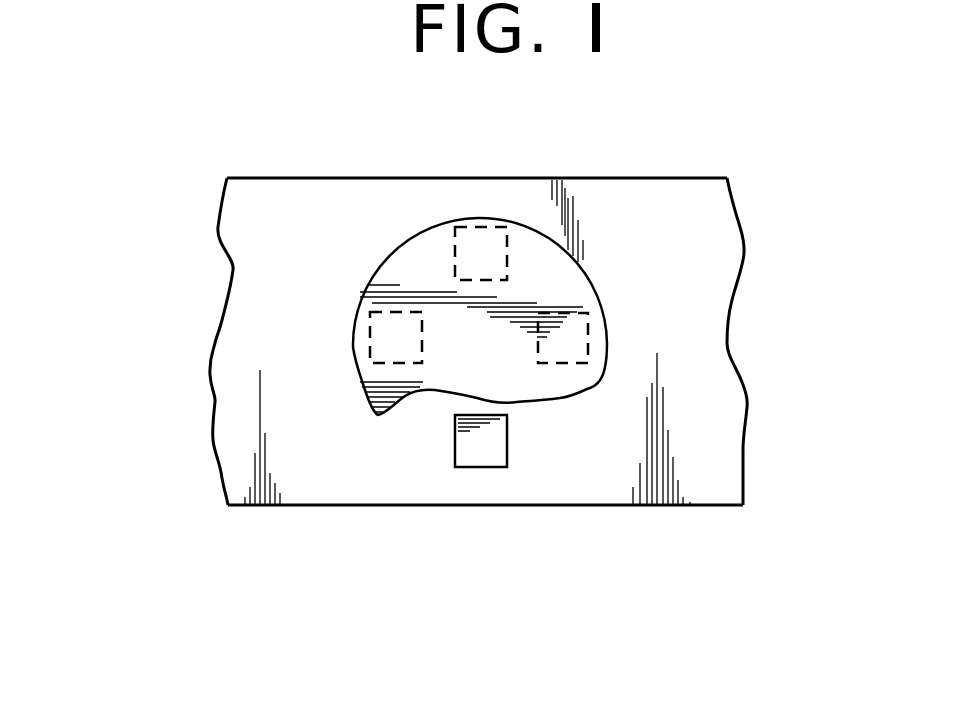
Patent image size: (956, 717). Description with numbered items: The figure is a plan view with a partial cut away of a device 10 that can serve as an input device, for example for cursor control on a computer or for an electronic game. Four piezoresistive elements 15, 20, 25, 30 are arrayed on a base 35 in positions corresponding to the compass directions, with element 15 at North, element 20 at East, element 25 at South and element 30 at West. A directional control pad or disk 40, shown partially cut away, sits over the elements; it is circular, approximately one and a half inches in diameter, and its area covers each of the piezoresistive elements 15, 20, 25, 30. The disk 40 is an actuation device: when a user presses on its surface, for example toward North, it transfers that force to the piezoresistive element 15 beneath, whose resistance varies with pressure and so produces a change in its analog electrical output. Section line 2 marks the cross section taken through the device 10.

The substrate 10 is at (742, 216).
The first dashed region (component site) 15 is at (485, 237).
The second dashed region (component site) 20 is at (585, 343).
The solid square element 25 is at (483, 450).
The third dashed region (component site) 30 is at (380, 352).
The substrate surface 35 is at (703, 490).
The circular region 40 is at (405, 243).
The section line 2- 2 is at (250, 343).